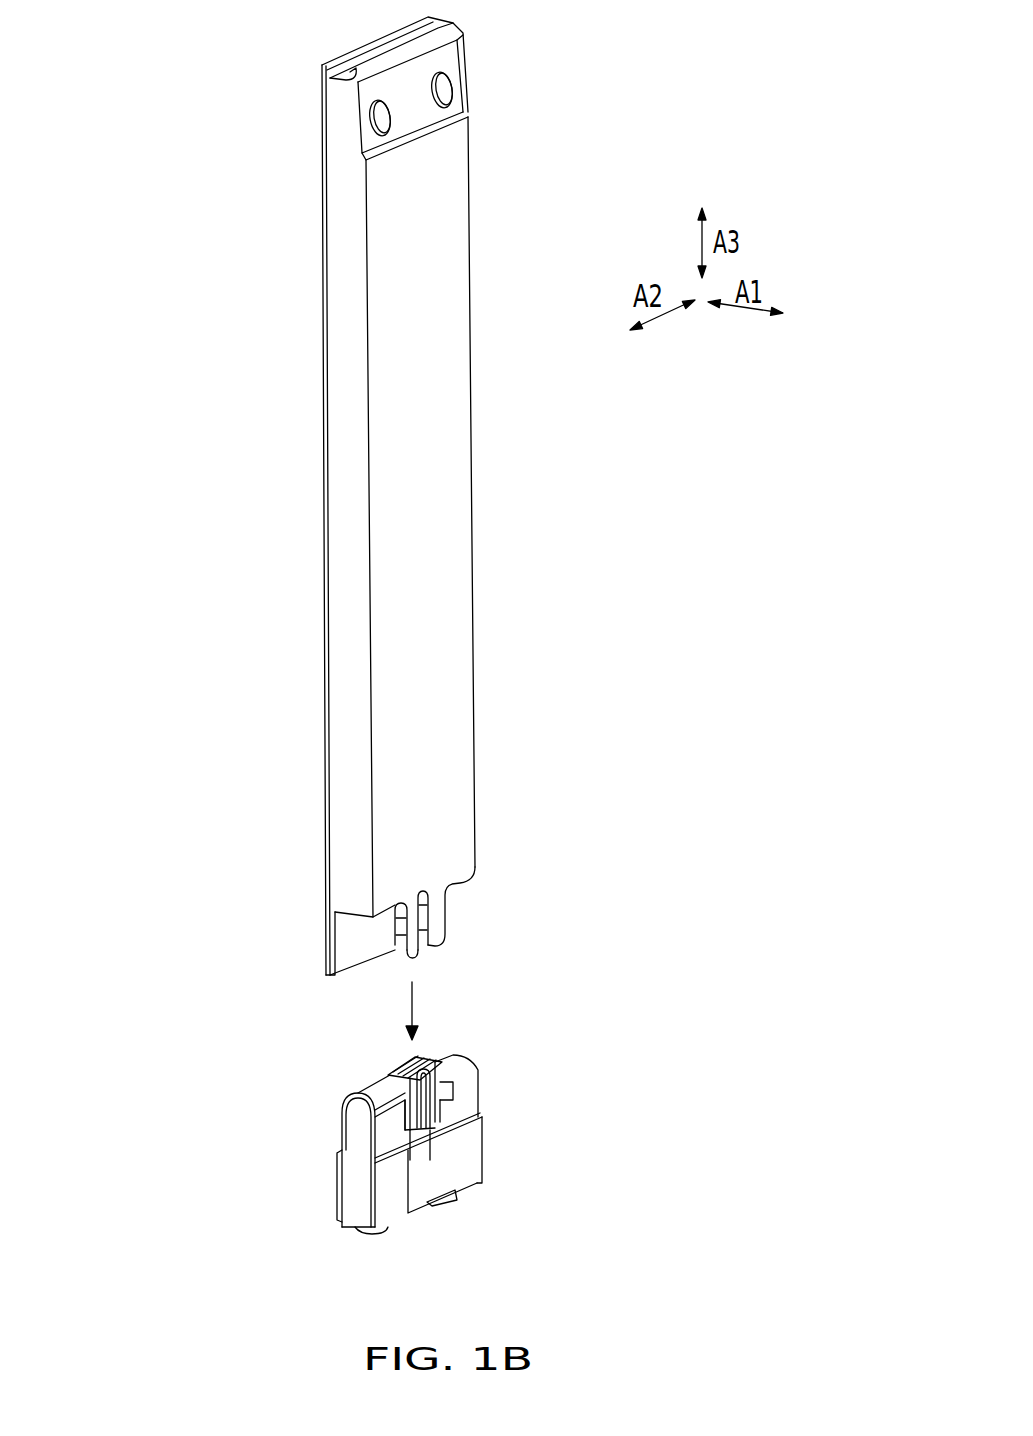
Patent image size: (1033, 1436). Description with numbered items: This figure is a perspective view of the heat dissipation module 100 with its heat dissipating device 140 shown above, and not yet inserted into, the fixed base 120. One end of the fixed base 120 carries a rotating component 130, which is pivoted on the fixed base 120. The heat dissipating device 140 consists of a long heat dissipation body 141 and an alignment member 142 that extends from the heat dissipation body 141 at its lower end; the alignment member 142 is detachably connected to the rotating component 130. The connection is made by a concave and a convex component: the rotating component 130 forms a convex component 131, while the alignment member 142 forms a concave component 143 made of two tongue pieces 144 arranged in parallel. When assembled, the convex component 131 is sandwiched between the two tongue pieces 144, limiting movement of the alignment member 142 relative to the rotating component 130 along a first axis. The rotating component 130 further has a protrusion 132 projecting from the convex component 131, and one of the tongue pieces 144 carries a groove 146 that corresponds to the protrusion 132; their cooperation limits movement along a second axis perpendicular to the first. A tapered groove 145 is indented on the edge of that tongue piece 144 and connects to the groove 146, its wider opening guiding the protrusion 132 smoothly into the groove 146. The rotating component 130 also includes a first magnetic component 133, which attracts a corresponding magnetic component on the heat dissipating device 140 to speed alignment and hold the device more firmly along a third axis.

The heat dissipation module 100 is at (397, 635).
The fixed base 120 is at (467, 1147).
The rotating component 130 is at (477, 1156).
The convex component 131 is at (440, 1068).
The protrusion 132 is at (430, 1130).
The first magnetic component 133 is at (388, 1065).
The heat dissipating device 140 is at (503, 37).
The heat dissipation body 141 is at (452, 422).
The alignment member 142 is at (263, 980).
The concave component 143 is at (237, 987).
The tongue pieces 144 is at (333, 963).
The tapered groove 145 is at (429, 958).
The groove 146 is at (434, 910).